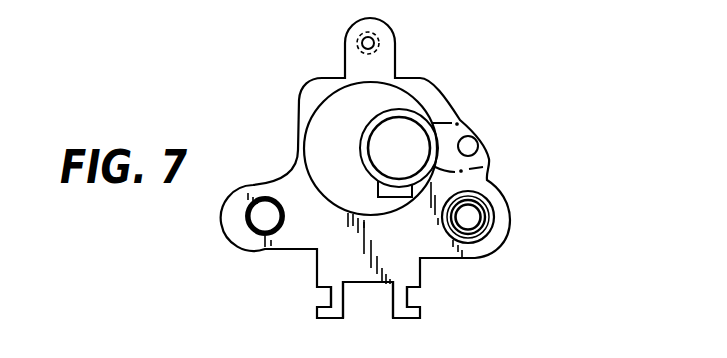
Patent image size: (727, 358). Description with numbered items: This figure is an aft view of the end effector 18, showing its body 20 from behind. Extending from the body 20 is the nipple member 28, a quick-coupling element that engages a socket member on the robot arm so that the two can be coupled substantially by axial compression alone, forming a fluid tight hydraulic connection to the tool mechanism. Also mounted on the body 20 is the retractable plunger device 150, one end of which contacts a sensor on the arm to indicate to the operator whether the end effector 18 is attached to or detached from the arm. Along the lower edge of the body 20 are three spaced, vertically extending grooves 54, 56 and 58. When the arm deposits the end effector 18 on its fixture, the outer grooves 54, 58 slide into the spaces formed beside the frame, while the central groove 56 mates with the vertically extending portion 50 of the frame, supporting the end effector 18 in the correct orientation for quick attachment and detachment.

The end effector 18 is at (190, 108).
The body 20 is at (301, 100).
The retractable plunger device 150 is at (393, 40).
The nipple member 28 is at (493, 204).
The portion of frame 50 is at (252, 236).
The groove 54 is at (322, 300).
The groove 56 is at (362, 296).
The groove 58 is at (420, 300).